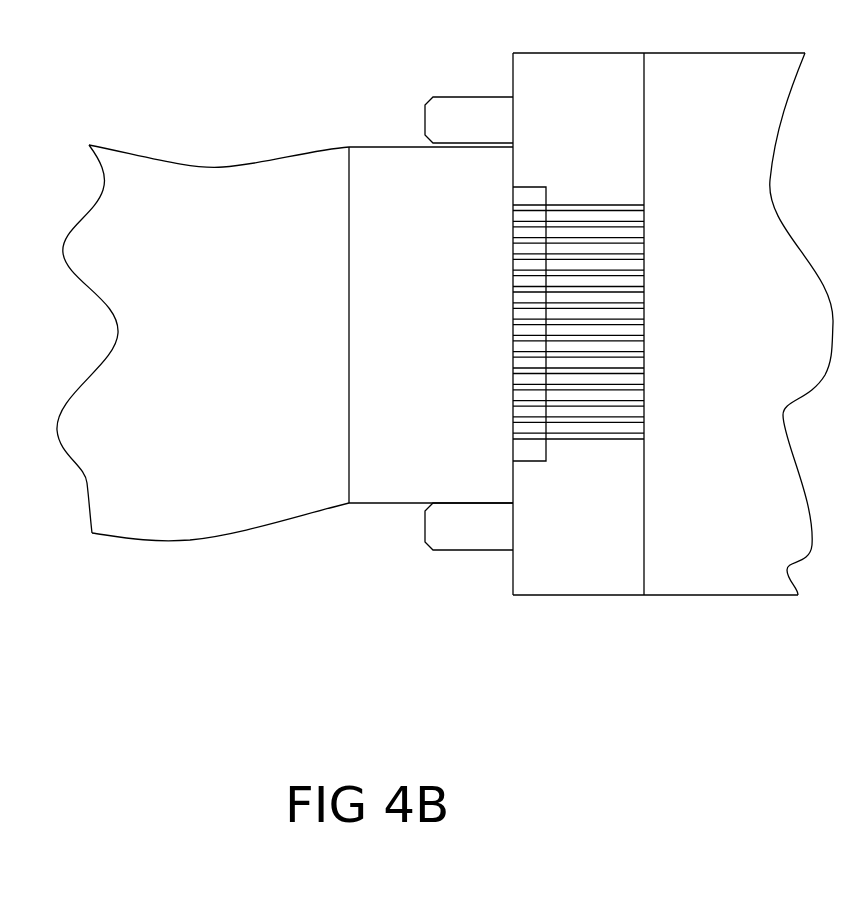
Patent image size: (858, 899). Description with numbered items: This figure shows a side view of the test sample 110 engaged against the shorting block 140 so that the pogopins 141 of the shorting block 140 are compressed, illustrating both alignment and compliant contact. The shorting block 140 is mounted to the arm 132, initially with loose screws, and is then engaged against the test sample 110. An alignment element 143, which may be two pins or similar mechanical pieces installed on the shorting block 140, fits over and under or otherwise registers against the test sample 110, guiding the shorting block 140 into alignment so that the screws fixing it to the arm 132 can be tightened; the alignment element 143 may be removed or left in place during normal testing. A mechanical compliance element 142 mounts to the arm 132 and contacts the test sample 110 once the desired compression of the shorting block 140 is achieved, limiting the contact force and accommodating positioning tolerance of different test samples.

The test sample 110 is at (285, 302).
The arm 132 is at (784, 370).
The shorting block 140 is at (659, 420).
The pogopins 141 is at (560, 443).
The mechanical compliance element 142 is at (431, 237).
The alignment element 143 is at (373, 364).